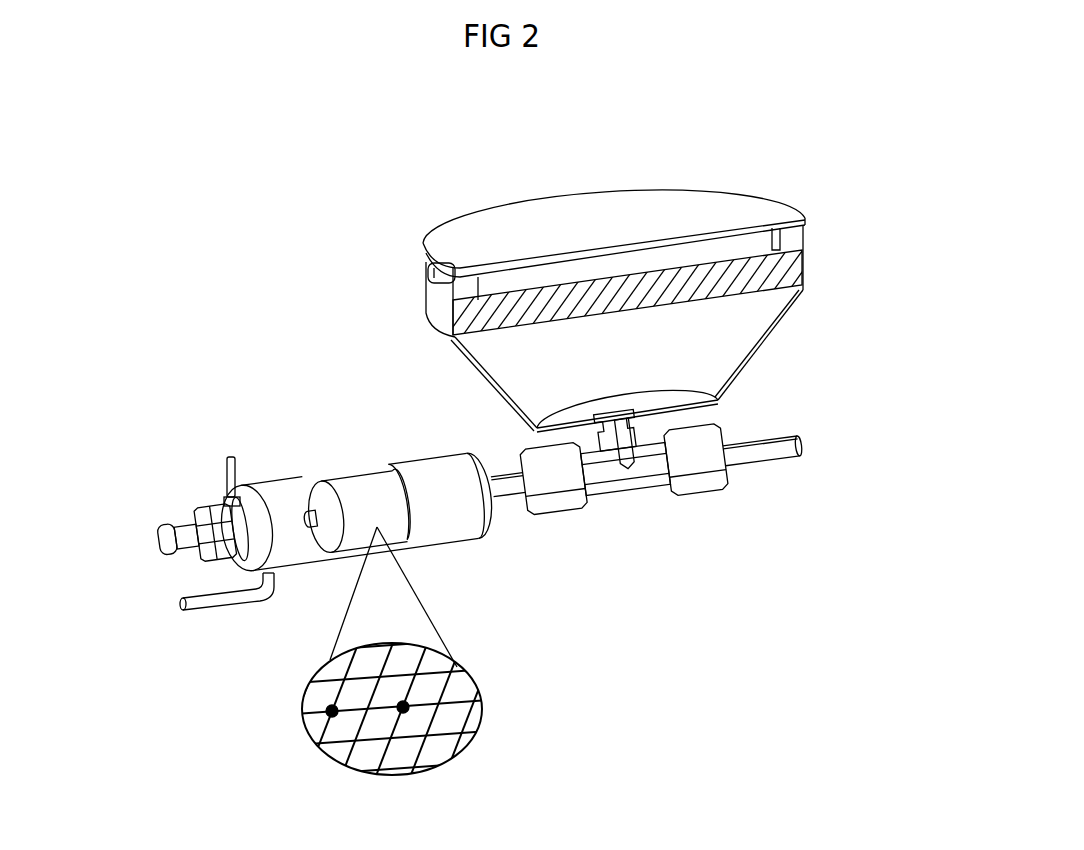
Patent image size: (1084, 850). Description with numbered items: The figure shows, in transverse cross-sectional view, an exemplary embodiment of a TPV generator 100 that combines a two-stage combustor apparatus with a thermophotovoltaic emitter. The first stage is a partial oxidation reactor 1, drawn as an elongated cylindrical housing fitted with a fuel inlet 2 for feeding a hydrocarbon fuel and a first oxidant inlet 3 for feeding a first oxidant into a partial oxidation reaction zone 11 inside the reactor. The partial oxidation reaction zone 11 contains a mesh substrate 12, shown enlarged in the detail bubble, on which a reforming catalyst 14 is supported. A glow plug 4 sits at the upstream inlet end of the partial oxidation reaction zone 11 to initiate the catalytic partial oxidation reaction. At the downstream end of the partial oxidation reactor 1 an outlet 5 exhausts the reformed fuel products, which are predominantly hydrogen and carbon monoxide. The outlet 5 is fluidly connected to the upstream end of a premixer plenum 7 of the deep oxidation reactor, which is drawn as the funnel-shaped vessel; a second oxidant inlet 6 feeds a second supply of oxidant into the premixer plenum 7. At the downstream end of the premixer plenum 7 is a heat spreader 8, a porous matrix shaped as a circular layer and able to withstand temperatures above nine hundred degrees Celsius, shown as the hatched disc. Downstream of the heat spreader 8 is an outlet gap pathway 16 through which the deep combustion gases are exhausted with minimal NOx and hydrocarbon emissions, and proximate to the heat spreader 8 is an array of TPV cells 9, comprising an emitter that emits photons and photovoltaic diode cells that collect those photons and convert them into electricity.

The TPV generator 100 is at (678, 167).
The partial oxidation reactor 1 is at (290, 480).
The fuel inlet 2 is at (225, 455).
The first oxidant inlet 3 is at (170, 605).
The glow plug 4 is at (168, 542).
The outlet 5 is at (513, 500).
The second oxidant inlet 6 is at (798, 440).
The premixer plenum 7 is at (780, 318).
The heat spreader 8 is at (787, 270).
The array of TPV cells 9 is at (770, 208).
The partial oxidation reaction zone 11 is at (330, 537).
The mesh substrate 12 is at (483, 695).
The reforming catalyst 14 is at (403, 708).
The outlet gap pathway 16 is at (427, 267).